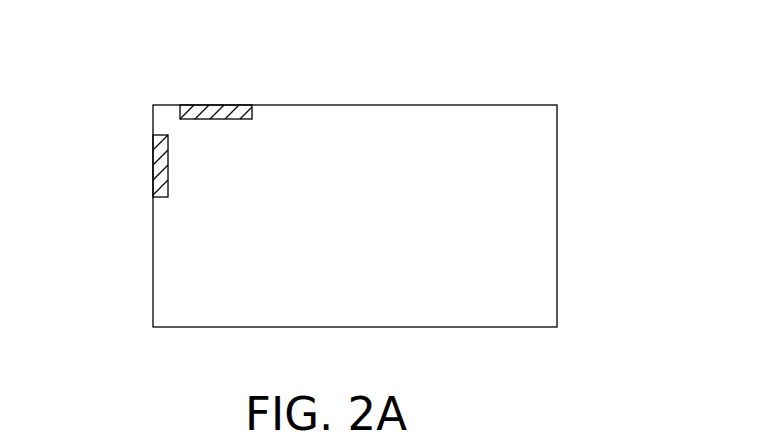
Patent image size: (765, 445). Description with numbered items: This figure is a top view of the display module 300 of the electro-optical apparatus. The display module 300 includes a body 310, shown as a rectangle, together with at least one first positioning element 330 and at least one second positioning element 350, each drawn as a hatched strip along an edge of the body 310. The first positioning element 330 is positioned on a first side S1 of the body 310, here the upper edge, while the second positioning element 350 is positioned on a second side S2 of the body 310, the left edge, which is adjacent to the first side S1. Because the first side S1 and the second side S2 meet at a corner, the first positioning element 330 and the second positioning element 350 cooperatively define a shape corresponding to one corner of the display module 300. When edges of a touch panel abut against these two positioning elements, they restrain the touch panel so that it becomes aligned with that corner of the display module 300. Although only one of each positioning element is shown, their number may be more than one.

The display module 300 is at (363, 169).
The body 310 is at (548, 223).
The first positioning element 330 is at (227, 113).
The second positioning element 350 is at (153, 168).
The first side S1 is at (358, 104).
The second side S2 is at (152, 225).